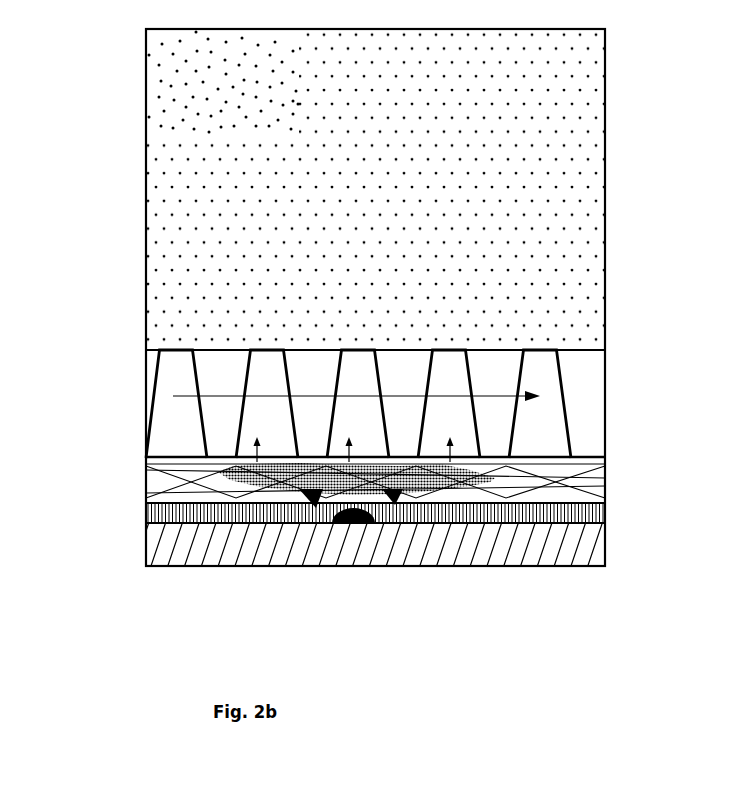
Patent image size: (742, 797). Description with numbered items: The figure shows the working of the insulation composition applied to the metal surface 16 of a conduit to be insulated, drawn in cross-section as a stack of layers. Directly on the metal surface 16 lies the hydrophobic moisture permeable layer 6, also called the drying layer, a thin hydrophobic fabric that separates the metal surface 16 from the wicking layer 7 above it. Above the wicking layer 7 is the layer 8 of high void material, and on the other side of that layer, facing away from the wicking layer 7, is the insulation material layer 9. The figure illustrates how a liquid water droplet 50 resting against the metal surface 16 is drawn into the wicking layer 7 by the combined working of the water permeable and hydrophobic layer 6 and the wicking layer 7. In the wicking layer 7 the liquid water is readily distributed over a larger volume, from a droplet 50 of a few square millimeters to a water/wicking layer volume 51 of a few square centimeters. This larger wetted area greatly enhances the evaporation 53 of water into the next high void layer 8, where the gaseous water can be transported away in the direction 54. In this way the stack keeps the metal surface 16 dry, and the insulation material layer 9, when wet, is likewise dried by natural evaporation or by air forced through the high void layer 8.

The insulation material layer 9 is at (620, 233).
The high void material layer 8 is at (623, 415).
The wicking layer 7 is at (623, 476).
The hydrophobic moisture permeable layer 6 is at (623, 511).
The metal surface 16 is at (623, 545).
The liquid water droplet 50 is at (348, 519).
The water/wicking layer volume 51 is at (220, 472).
The evaporation 53 is at (258, 466).
The direction 54 is at (277, 396).